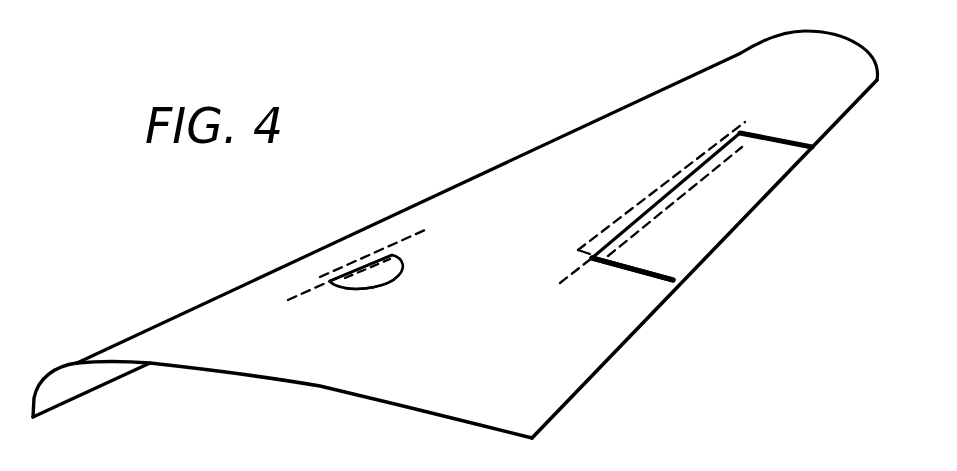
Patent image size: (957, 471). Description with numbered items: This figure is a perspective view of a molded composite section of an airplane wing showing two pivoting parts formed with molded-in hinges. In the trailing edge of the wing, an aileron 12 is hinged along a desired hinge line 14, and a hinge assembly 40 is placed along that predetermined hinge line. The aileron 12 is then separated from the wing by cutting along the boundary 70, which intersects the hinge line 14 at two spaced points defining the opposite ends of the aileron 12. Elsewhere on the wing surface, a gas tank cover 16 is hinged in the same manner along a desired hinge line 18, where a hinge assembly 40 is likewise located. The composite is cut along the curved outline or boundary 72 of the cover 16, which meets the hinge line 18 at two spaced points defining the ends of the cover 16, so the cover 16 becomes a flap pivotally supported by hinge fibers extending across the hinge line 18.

The aileron 12 is at (753, 186).
The hinge line 14 is at (686, 162).
The gas tank cover 16 is at (403, 266).
The hinge line 18 is at (345, 273).
The hinge assembly 40 is at (745, 122).
The boundary 70 is at (652, 275).
The curved outline or boundary 72 is at (357, 289).